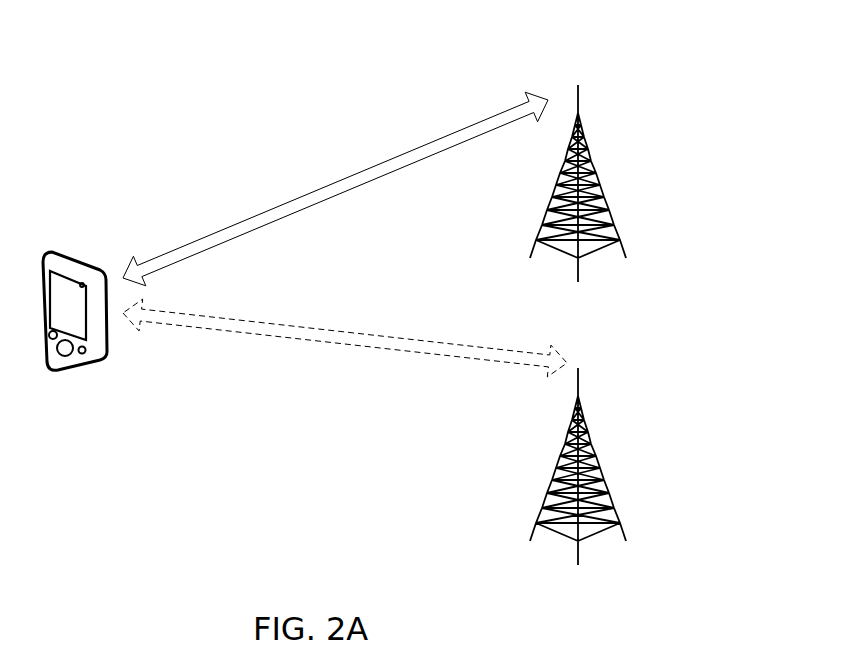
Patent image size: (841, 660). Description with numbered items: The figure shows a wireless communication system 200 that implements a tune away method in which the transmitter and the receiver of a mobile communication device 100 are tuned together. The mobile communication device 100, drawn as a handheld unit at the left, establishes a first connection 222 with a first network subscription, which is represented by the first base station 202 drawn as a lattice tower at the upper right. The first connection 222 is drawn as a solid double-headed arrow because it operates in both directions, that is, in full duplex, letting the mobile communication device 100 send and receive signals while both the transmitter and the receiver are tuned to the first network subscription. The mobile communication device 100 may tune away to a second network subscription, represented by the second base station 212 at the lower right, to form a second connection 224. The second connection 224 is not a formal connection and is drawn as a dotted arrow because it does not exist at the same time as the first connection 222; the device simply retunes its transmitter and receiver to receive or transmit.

The mobile communication device 100 is at (87, 259).
The wireless communication system 200 is at (637, 121).
The first base station 202 is at (572, 257).
The second base station 212 is at (572, 540).
The first connection 222 is at (315, 190).
The second connection 224 is at (315, 329).